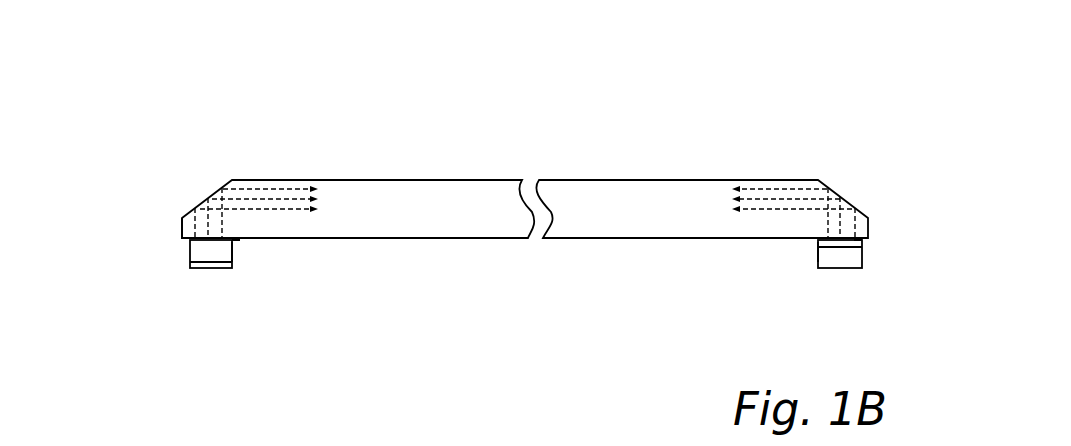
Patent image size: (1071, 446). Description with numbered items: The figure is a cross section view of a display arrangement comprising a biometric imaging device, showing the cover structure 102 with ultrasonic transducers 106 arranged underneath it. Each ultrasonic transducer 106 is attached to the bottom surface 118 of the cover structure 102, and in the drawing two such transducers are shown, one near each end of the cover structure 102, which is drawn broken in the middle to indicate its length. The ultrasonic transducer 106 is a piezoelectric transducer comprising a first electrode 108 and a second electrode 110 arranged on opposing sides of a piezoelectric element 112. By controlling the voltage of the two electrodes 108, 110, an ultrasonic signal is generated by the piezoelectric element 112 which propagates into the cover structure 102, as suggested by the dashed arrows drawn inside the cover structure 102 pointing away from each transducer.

The cover structure 102 is at (347, 198).
The ultrasonic transducer 106 is at (178, 250).
The first electrode 108 is at (232, 241).
The second electrode 110 is at (207, 270).
The piezoelectric element 112 is at (232, 252).
The bottom surface 118 is at (433, 240).